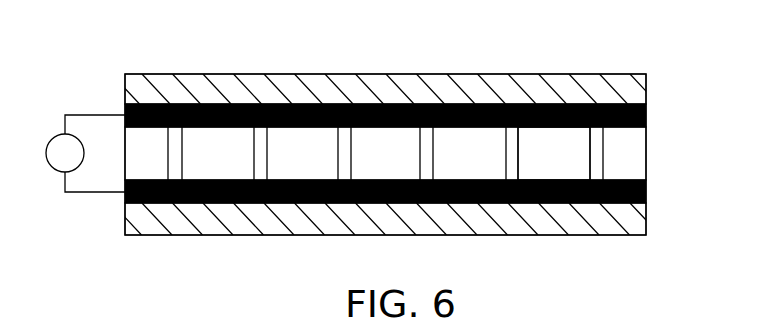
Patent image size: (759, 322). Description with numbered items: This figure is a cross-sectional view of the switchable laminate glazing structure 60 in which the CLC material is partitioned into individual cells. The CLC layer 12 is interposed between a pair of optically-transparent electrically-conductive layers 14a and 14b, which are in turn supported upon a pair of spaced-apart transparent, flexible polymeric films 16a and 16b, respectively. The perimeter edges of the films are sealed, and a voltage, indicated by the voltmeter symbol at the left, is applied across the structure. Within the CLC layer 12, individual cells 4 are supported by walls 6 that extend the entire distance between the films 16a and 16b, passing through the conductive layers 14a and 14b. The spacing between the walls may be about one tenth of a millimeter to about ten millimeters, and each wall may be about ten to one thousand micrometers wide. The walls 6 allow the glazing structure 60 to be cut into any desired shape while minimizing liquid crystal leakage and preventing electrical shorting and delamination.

The glazing structure 60 is at (207, 59).
The walls 6 is at (513, 138).
The individual cells 4 is at (552, 140).
The CLC layer 12 is at (632, 157).
The optically-transparent electrically-conductive layer 14a is at (647, 117).
The optically-transparent electrically-conductive layer 14b is at (647, 188).
The transparent flexible polymeric film 16a is at (620, 90).
The transparent flexible polymeric film 16b is at (633, 220).